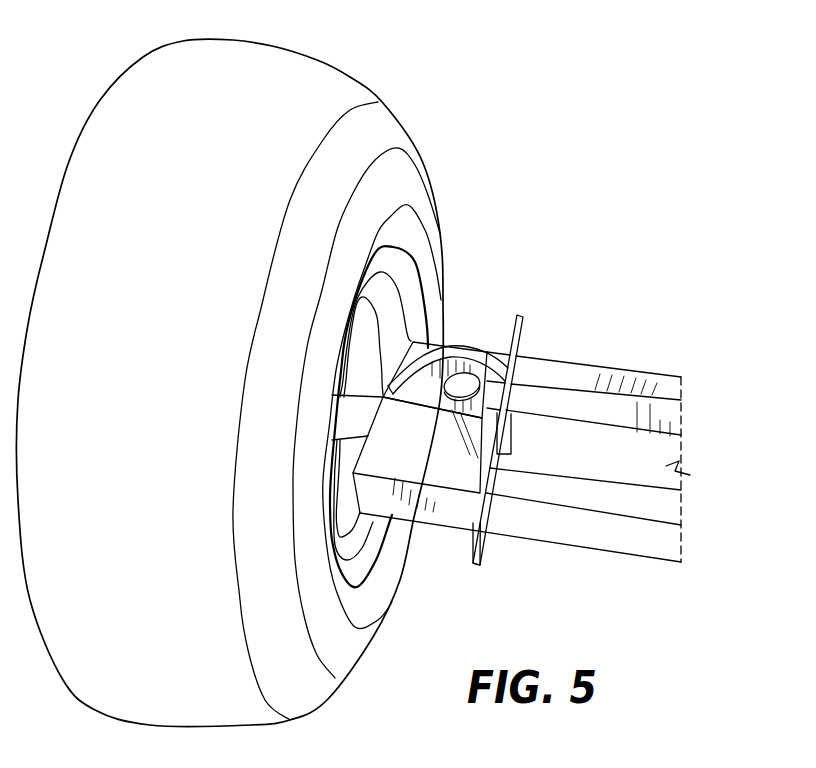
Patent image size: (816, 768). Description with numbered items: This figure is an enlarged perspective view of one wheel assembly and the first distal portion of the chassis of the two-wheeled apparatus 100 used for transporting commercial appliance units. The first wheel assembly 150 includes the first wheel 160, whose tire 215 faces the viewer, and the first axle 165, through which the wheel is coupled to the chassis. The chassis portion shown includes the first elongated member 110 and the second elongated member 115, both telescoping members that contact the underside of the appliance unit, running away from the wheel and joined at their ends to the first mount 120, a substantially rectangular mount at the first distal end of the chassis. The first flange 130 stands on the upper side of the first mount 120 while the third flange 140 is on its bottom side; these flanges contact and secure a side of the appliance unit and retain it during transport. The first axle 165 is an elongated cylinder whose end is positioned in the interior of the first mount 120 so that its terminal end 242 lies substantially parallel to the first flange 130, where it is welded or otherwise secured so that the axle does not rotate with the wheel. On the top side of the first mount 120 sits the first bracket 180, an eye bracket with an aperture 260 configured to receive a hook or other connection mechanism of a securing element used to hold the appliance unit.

The two-wheeled apparatus 100 is at (628, 157).
The first elongated member 110 is at (612, 372).
The second elongated member 115 is at (598, 553).
The first mount 120 is at (445, 460).
The first flange 130 is at (521, 332).
The third flange 140 is at (487, 548).
The first wheel assembly 150 is at (520, 256).
The first wheel 160 is at (305, 52).
The first axle 165 is at (368, 428).
The first bracket 180 is at (463, 345).
The tire 215 is at (163, 397).
The terminal end 242 is at (508, 450).
The aperture 260 is at (440, 396).